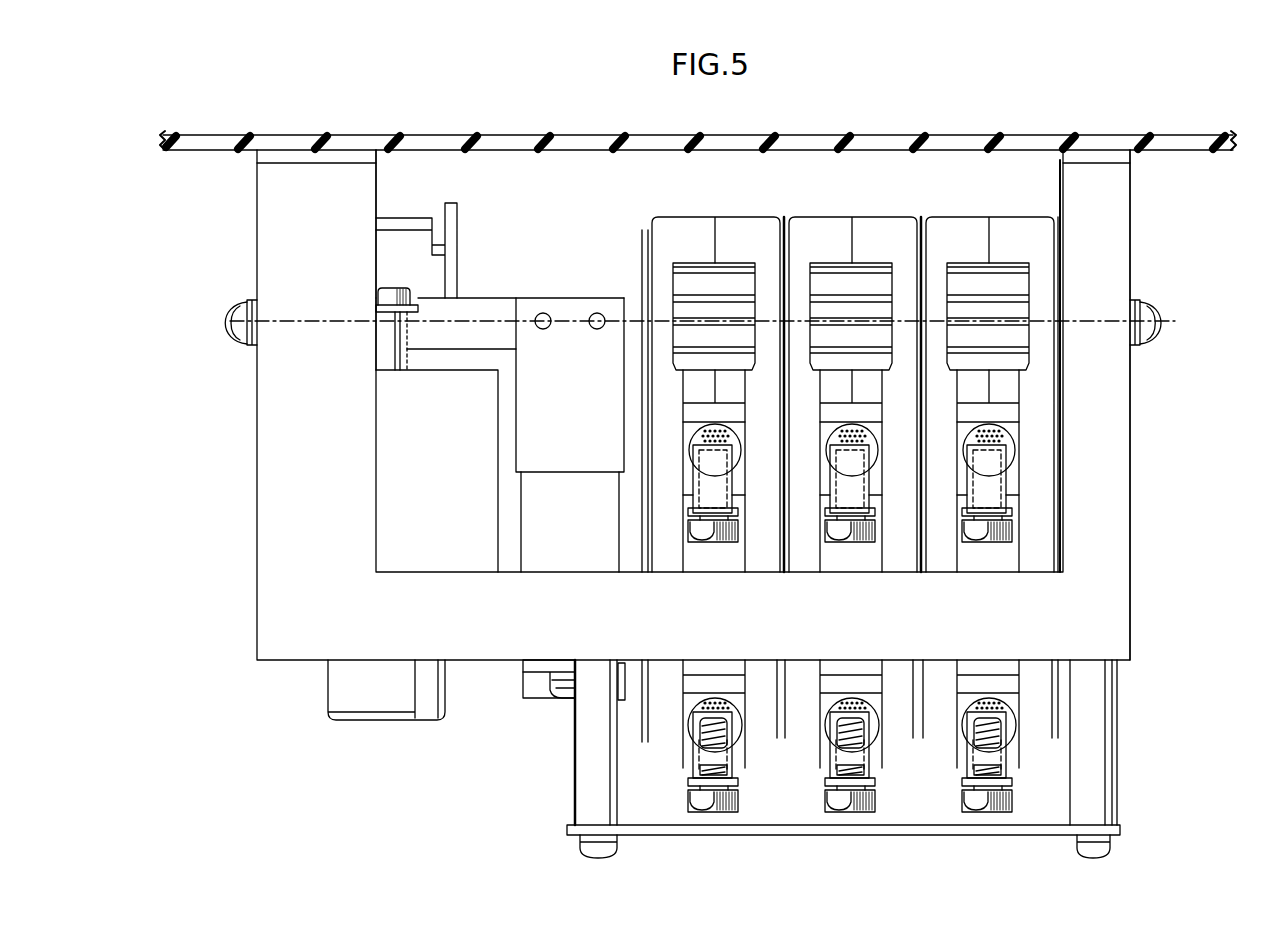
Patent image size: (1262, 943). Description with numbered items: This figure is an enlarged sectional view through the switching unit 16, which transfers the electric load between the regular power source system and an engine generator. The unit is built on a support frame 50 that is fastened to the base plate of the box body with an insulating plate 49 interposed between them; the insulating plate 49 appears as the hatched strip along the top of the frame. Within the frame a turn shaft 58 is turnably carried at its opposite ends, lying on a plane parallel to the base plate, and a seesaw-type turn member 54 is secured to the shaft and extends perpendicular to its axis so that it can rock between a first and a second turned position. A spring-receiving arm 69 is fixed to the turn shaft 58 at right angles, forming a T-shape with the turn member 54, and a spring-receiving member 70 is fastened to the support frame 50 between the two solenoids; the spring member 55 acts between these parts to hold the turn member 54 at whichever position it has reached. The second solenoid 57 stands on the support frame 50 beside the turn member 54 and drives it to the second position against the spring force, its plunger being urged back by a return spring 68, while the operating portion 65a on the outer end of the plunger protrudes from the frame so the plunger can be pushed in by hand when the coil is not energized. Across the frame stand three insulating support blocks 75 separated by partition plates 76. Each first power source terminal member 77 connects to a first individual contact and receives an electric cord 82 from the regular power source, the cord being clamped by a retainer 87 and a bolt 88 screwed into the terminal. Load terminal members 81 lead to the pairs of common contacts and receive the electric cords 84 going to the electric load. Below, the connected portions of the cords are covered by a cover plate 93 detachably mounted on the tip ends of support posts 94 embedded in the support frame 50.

The switching unit 16 is at (1140, 467).
The insulating plate 49 is at (212, 143).
The support frame 50 is at (1125, 567).
The seesaw-type turn member 54 is at (388, 260).
The spring member 55 is at (538, 540).
The second solenoid 57 is at (423, 490).
The turn shaft 58 is at (475, 302).
The operating portion 65a is at (378, 700).
The return spring 68 is at (405, 318).
The spring-receiving arm 69 is at (378, 338).
The spring-receiving member 70 is at (542, 698).
The support block 75 is at (733, 225).
The partition plate 76 is at (780, 287).
The first power source terminal member 77 is at (740, 480).
The load terminal member 81 is at (743, 743).
The electric cord 82 is at (707, 427).
The electric cord 84 is at (715, 700).
The retainer 87 is at (890, 488).
The bolt 88 is at (840, 530).
The cover plate 93 is at (820, 830).
The support post 94 is at (587, 775).